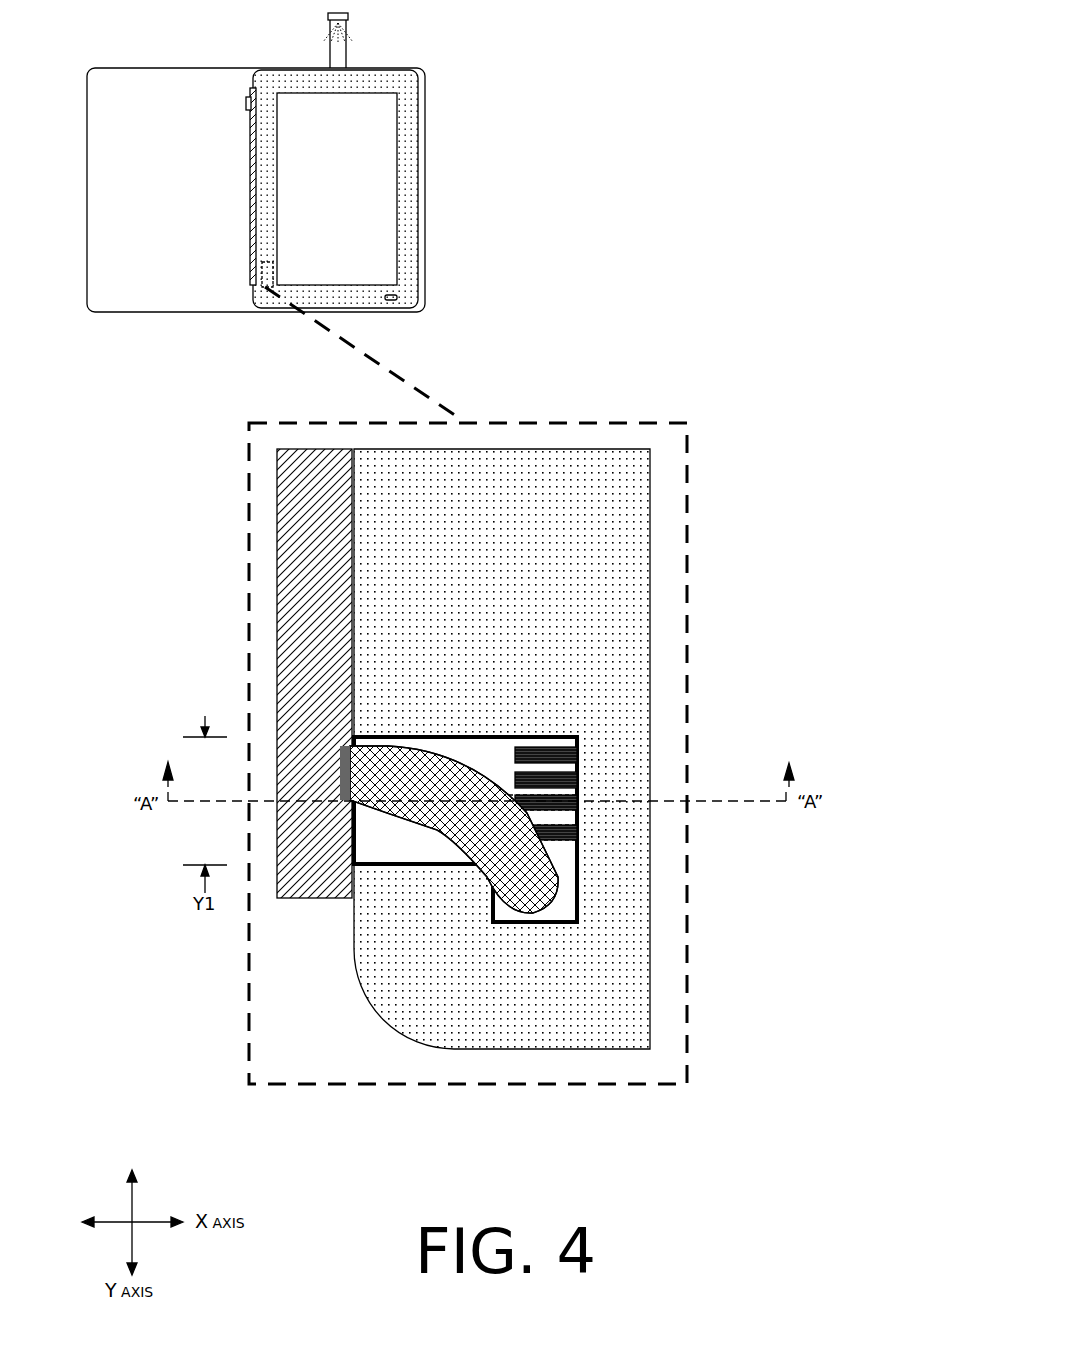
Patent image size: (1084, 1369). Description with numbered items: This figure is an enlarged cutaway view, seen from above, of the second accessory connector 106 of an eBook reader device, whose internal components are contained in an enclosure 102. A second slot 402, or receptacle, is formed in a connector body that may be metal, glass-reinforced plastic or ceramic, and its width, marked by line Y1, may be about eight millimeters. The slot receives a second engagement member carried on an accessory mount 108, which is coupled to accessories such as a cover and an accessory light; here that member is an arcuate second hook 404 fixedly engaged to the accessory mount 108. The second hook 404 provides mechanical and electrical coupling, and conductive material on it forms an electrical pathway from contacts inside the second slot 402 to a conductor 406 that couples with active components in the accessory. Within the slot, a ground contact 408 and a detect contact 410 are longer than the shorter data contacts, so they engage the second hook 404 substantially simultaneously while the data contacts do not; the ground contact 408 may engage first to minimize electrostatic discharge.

The second accessory connector 106 is at (809, 55).
The enclosure 102 is at (508, 567).
The accessory mount 108 is at (310, 607).
The second slot 402 is at (450, 864).
The second hook 404 is at (548, 886).
The conductor 406 is at (343, 790).
The ground contact 408 is at (577, 793).
The detect contact 410 is at (577, 840).